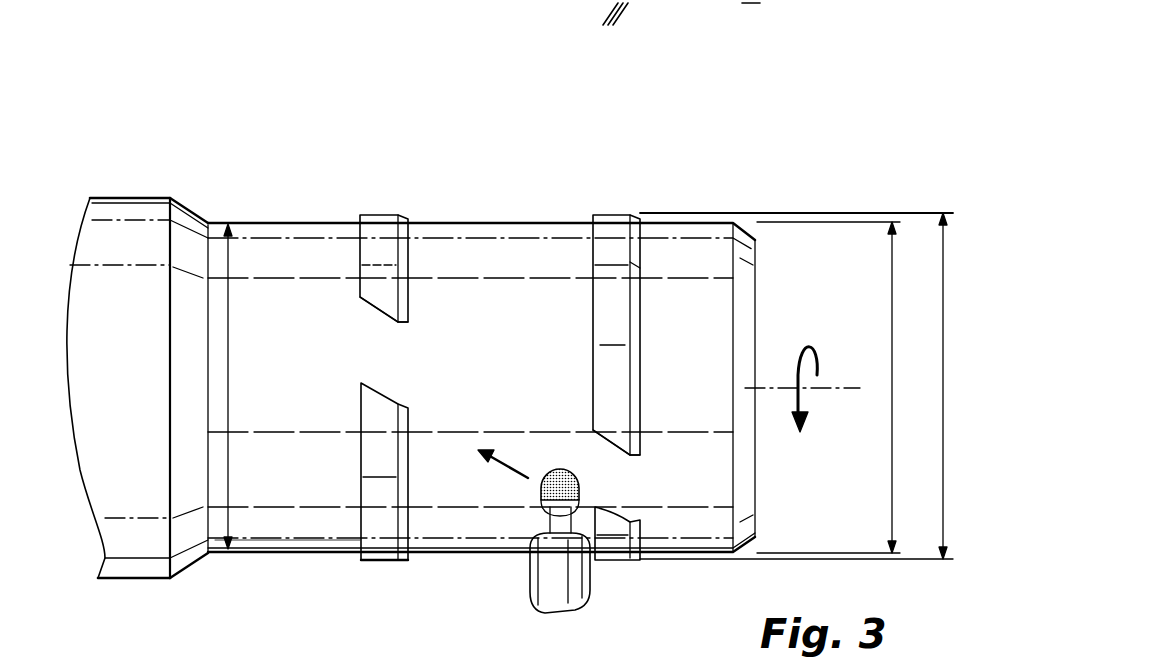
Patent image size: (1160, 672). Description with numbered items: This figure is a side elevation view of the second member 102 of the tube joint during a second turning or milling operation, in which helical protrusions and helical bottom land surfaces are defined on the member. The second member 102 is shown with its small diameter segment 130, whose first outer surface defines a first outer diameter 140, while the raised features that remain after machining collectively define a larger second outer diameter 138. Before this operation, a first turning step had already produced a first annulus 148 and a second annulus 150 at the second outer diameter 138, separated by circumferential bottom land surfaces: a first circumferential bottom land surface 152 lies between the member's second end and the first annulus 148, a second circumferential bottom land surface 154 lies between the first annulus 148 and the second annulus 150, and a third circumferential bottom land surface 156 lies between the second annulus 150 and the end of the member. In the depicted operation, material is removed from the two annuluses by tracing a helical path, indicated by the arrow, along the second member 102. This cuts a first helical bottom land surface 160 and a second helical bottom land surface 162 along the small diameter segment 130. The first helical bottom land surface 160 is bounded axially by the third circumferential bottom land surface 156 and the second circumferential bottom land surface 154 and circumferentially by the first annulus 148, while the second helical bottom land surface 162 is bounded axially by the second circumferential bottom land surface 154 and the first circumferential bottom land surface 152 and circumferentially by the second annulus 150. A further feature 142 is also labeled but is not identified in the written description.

The second member 102 is at (238, 116).
The small diameter segment 130 is at (378, 598).
The second outer diameter 138 is at (943, 392).
The first outer diameter 140 is at (893, 385).
The body width 142 is at (229, 390).
The first annulus 148 is at (612, 225).
The second annulus 150 is at (374, 222).
The first circumferential bottom land surface 152 is at (289, 515).
The second circumferential bottom land surface 154 is at (486, 515).
The third circumferential bottom land surface 156 is at (698, 514).
The first helical bottom land surface 160 is at (618, 460).
The second helical bottom land surface 162 is at (388, 328).